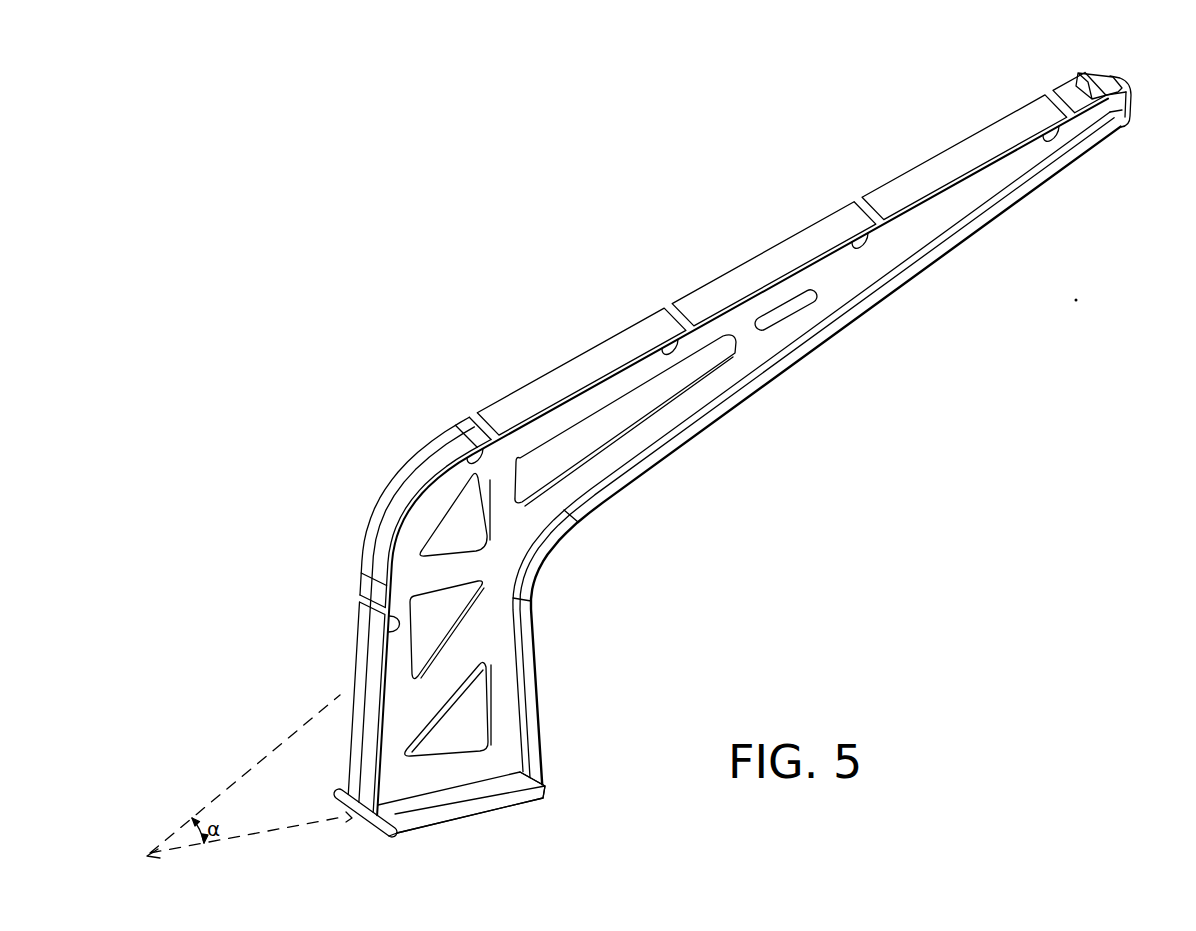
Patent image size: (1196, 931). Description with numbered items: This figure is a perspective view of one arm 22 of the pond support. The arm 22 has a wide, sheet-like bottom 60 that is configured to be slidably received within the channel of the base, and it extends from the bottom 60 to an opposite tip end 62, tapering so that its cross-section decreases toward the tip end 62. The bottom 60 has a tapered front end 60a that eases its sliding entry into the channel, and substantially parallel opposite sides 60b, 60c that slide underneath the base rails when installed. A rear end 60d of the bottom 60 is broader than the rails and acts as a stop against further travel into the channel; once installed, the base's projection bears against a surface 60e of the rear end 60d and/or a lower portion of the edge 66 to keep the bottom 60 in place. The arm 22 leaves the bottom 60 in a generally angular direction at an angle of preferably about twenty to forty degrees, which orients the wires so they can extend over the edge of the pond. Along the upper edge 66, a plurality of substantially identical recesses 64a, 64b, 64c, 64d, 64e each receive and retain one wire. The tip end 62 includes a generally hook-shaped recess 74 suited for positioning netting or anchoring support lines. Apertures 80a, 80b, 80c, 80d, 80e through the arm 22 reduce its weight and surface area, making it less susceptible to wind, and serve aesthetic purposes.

The arm 22 is at (630, 166).
The bottom 60 is at (497, 797).
The tapered front end 60a is at (544, 783).
The side 60b is at (337, 789).
The side 60c is at (427, 821).
The rear end 60d is at (370, 833).
The surface 60e is at (343, 817).
The tip end 62 is at (1135, 91).
The recess 64a is at (357, 603).
The recess 64b is at (476, 413).
The recess 64c is at (670, 303).
The recess 64d is at (860, 196).
The recess 64e is at (1052, 92).
The upper edge 66 is at (767, 258).
The hook-shaped recess 74 is at (1073, 80).
The aperture 80a is at (478, 663).
The aperture 80b is at (487, 584).
The aperture 80c is at (487, 500).
The aperture 80d is at (648, 421).
The aperture 80e is at (792, 313).